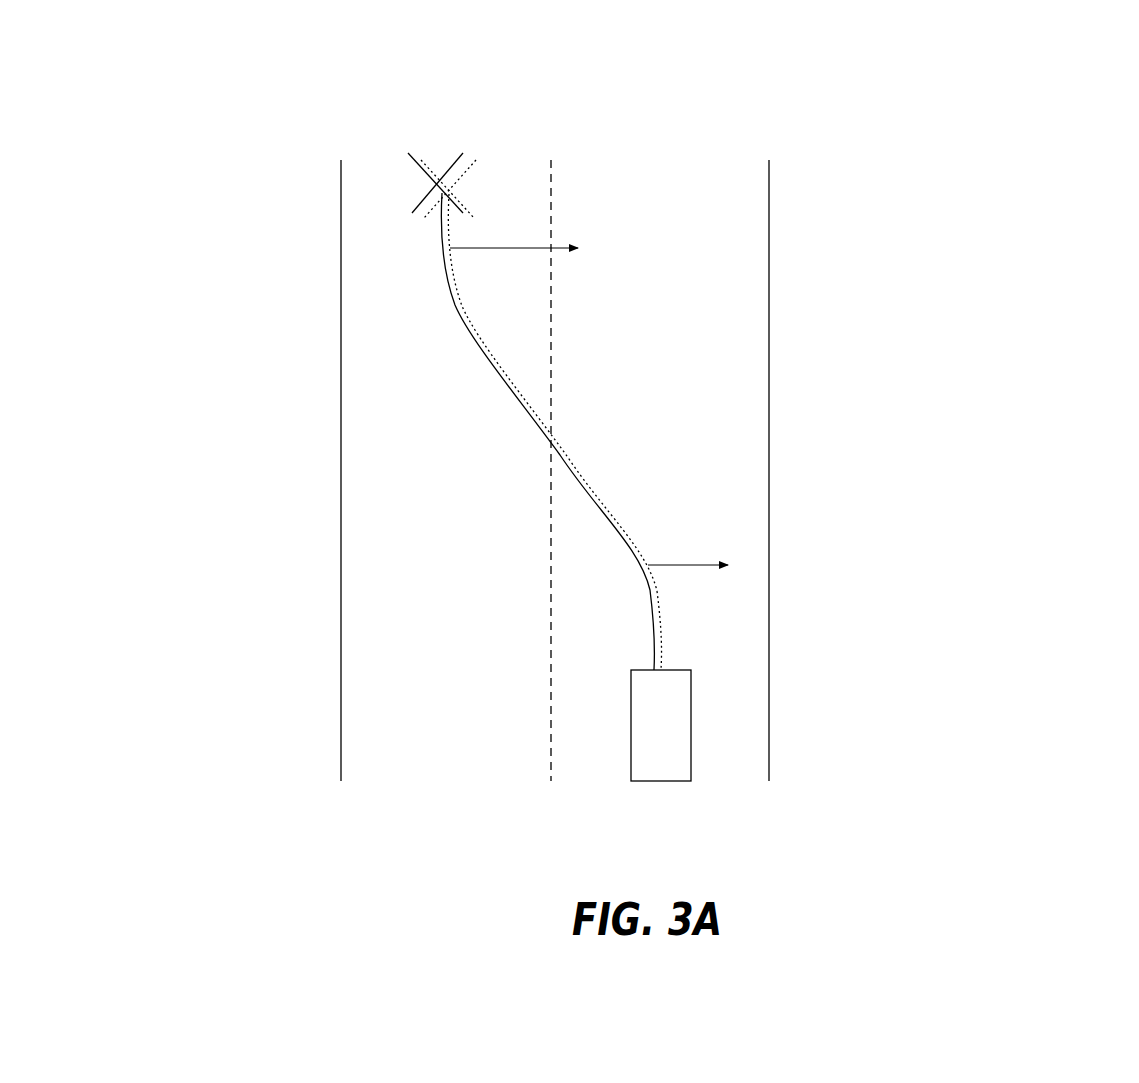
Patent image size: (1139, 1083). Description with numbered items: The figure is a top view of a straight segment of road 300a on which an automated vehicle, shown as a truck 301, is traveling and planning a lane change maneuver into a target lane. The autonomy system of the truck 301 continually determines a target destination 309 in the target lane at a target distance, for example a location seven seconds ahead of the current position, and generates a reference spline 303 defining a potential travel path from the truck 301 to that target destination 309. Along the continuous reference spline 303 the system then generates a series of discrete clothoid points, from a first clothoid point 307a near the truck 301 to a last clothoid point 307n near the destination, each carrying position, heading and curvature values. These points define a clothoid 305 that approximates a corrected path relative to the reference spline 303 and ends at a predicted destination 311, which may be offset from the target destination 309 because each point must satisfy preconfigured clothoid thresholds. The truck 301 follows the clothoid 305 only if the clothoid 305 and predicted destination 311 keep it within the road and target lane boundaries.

The straight segment of road 300a is at (226, 50).
The truck 301 is at (678, 760).
The reference spline 303 is at (612, 540).
The clothoid 305 is at (578, 465).
The clothoid point 307n is at (706, 246).
The clothoid point 307a is at (876, 564).
The target destination 309 is at (437, 193).
The predicted destination 311 is at (467, 172).